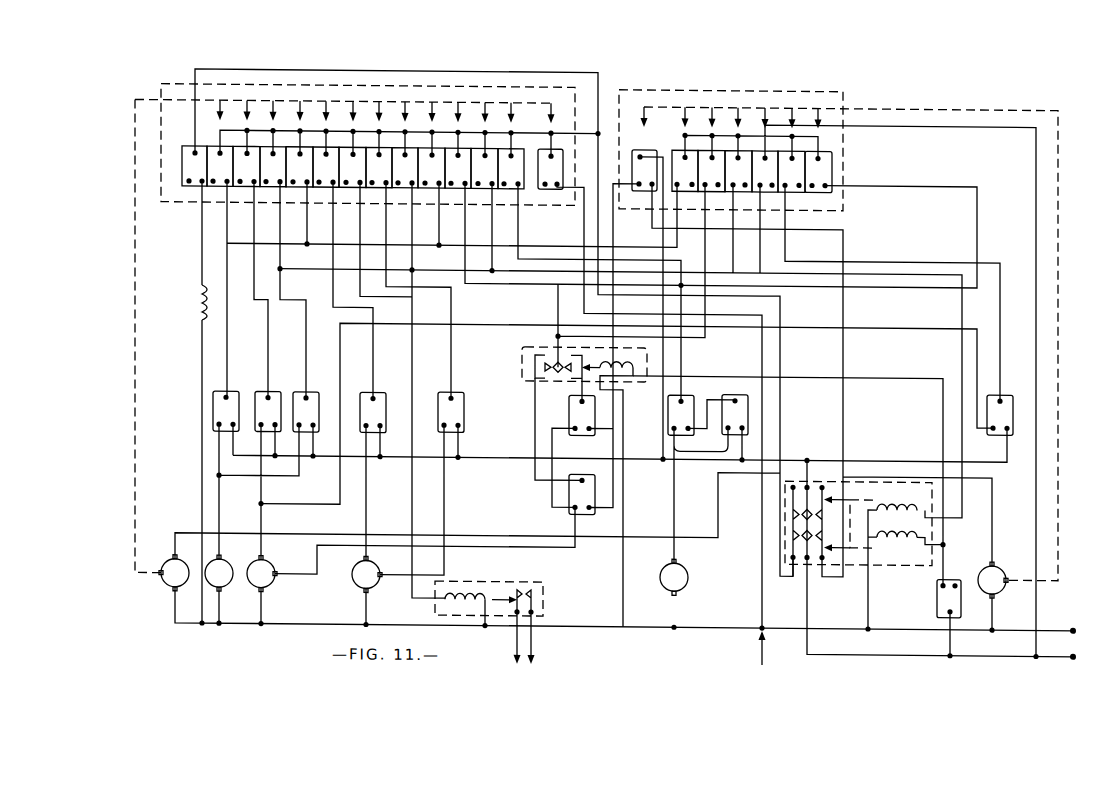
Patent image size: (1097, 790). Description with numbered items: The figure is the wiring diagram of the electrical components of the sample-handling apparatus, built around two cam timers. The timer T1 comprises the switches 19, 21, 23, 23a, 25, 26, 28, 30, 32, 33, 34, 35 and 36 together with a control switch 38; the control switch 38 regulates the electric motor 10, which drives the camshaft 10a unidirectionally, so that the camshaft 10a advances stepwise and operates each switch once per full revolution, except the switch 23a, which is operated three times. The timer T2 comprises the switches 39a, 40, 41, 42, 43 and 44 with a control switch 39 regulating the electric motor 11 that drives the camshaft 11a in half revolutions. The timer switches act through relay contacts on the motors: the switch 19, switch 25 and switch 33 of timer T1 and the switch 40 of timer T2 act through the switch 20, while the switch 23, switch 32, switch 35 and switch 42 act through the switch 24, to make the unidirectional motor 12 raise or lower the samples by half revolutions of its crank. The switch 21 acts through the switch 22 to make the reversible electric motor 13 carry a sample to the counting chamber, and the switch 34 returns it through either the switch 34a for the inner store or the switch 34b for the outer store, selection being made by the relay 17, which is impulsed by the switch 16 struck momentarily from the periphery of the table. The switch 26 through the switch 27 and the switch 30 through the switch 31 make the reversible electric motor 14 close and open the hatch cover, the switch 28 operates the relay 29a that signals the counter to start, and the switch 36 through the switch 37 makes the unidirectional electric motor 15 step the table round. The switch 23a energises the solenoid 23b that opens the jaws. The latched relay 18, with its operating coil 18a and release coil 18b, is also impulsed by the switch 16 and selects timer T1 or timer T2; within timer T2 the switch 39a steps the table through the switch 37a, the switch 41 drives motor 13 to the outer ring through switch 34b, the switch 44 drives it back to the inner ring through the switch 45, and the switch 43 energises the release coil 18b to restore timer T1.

The electric motor 10 is at (166, 563).
The camshaft 10a is at (131, 100).
The electric motor 11 is at (1000, 585).
The camshaft 11a is at (1002, 99).
The unidirectional motor 12 is at (231, 584).
The reversible electric motor 13 is at (266, 570).
The reversible electric motor 14 is at (358, 584).
The unidirectional electric motor 15 is at (662, 577).
The switch 16 is at (937, 600).
The relay 17 is at (642, 362).
The mechanically latched/electrically released relay 18 is at (853, 568).
The operating coil 18a is at (900, 539).
The release coil 18b is at (888, 499).
The switch 19 is at (212, 179).
The switch 20 is at (228, 393).
The switch 21 is at (239, 179).
The switch 22 is at (270, 393).
The switch 23 is at (265, 179).
The switch 23a is at (190, 184).
The solenoid 23b is at (195, 302).
The switch 24 is at (307, 393).
The switch 25 is at (292, 179).
The switch 26 is at (318, 179).
The switch 27 is at (375, 393).
The switch 28 is at (345, 179).
The relay 29a is at (478, 580).
The switch 30 is at (371, 179).
The switch 31 is at (453, 392).
The switch 32 is at (397, 179).
The switch 33 is at (424, 179).
The switch 34 is at (450, 179).
The switch 34a is at (570, 405).
The switch 34b is at (569, 489).
The switch 35 is at (477, 179).
The switch 36 is at (503, 179).
The switch 37 is at (668, 404).
The switch 37a is at (748, 415).
The control switch 38 is at (543, 179).
The control switch 39 is at (637, 179).
The switch 39a is at (836, 164).
The switch 40 is at (677, 179).
The switch 41 is at (704, 179).
The switch 42 is at (730, 179).
The switch 43 is at (757, 179).
The switch 44 is at (784, 179).
The switch 45 is at (1008, 398).
The timer T1 is at (153, 191).
The timer T2 is at (850, 200).